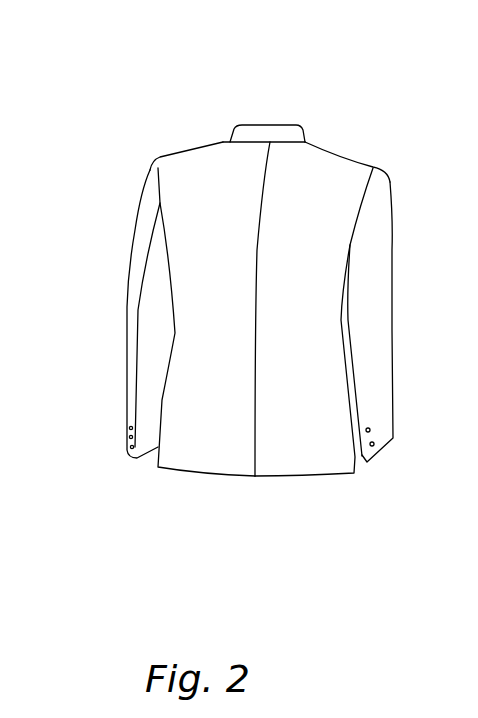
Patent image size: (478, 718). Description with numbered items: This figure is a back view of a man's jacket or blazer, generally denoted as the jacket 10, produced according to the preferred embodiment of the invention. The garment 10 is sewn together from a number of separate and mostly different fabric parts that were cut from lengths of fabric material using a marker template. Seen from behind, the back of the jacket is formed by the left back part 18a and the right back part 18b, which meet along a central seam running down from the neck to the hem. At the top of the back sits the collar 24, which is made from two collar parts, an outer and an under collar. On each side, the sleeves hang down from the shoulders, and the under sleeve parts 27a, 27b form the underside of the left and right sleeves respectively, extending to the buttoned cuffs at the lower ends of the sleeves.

The jacket 10 is at (241, 304).
The collar part 24 is at (283, 133).
The left under sleeve part 27a is at (357, 402).
The right under sleeve part 27b is at (148, 377).
The left back part 18a is at (193, 452).
The right back part 18b is at (305, 452).